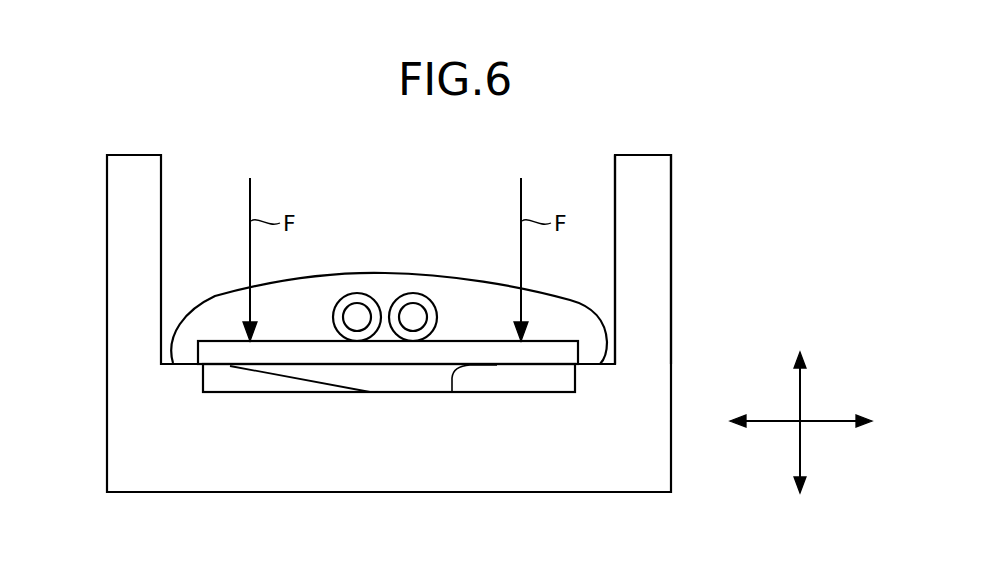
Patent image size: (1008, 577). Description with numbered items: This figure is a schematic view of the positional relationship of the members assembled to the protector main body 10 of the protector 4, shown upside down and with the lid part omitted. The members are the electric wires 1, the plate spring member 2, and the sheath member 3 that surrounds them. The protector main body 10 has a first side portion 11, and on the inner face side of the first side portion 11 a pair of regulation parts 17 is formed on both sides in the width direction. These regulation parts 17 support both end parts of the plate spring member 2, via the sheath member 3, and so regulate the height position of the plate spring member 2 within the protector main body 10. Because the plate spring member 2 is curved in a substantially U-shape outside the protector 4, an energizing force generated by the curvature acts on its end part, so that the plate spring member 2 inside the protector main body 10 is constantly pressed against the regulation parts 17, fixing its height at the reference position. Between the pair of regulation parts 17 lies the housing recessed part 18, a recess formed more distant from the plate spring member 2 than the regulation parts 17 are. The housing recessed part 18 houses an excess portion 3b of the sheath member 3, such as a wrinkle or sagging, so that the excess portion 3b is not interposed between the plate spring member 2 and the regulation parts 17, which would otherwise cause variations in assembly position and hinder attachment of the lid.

The electric wires 1 is at (357, 300).
The plate spring member 2 is at (226, 352).
The sheath member 3 is at (453, 278).
The excess portion 3b is at (451, 388).
The protector 4 is at (448, 351).
The protector main body 10 is at (662, 200).
The first side portion 11 is at (368, 485).
The regulation parts 17 is at (172, 363).
The housing recessed part 18 is at (270, 391).